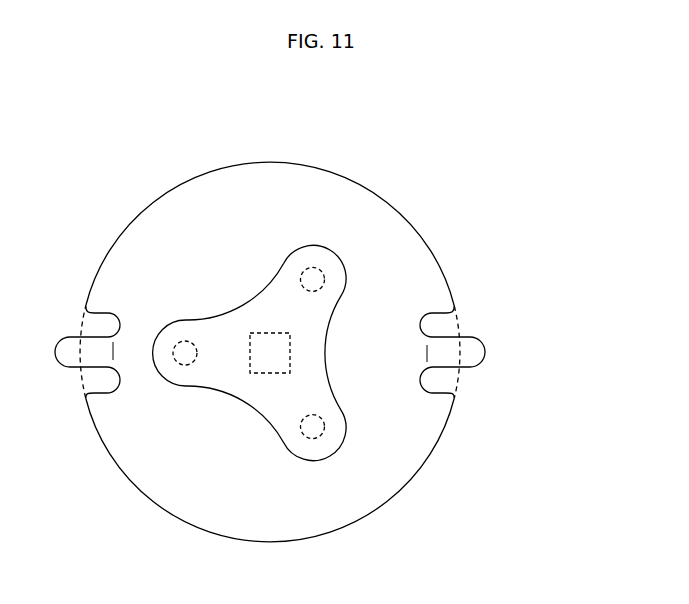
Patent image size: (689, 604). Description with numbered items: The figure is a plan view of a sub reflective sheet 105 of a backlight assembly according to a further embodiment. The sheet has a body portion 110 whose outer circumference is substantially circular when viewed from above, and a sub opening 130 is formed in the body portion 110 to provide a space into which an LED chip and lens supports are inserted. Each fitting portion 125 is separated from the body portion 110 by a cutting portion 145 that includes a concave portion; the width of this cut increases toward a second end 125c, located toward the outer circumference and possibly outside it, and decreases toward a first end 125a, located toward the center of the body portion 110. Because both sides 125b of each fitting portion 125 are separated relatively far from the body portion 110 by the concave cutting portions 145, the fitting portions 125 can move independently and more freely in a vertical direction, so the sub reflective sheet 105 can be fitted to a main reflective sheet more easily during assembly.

The sub reflective sheet 105 is at (444, 122).
The body portion 110 is at (207, 186).
The fitting portion 125 is at (488, 359).
The first end 125a is at (425, 350).
The sides 125b is at (469, 368).
The second end 125c is at (486, 353).
The sub opening 130 is at (270, 420).
The cutting portion 145 is at (430, 324).